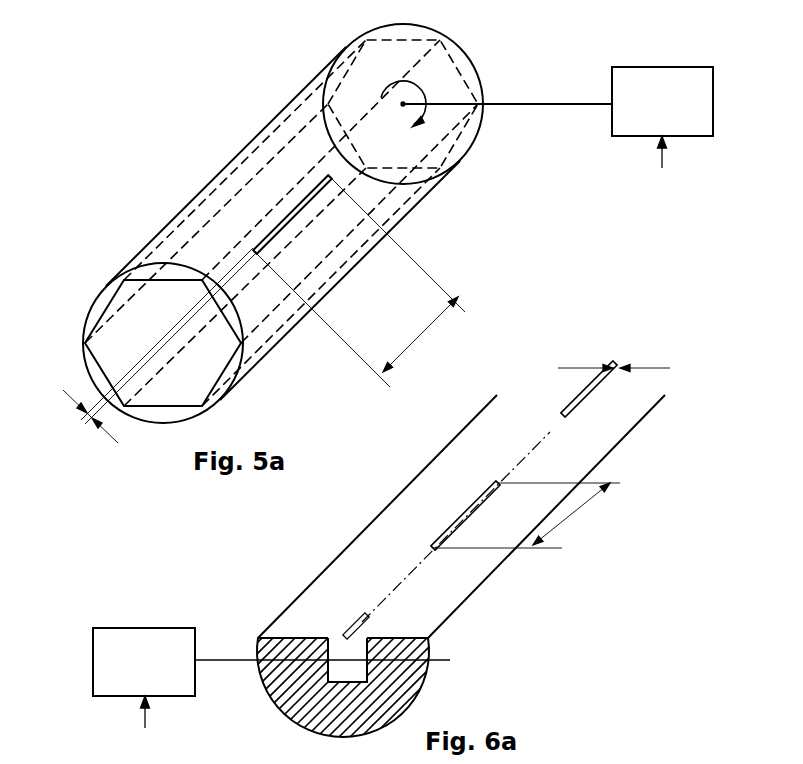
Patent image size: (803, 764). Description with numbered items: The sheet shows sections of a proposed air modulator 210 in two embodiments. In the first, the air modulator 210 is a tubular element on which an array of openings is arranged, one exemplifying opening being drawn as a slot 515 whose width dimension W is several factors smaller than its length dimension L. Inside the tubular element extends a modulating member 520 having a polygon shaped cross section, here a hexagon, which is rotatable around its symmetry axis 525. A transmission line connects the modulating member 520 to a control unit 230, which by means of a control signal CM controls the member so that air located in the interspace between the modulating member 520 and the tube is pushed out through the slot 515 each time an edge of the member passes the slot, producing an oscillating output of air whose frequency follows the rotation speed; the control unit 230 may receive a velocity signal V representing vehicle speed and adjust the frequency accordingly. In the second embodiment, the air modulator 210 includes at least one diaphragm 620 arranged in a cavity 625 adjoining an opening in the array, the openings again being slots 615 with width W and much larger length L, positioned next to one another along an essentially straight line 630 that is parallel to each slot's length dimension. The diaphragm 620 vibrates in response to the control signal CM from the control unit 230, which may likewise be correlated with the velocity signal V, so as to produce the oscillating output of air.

In FIG. 5A, the air modulator 210 is at (283, 223).
In FIG. 6A, the air modulator 210 is at (450, 516).
In FIG. 5A, the control unit 230 is at (574, 106).
In FIG. 6A, the control unit 230 is at (267, 669).
In FIG. 5A, the slot 515 is at (264, 288).
In FIG. 5A, the modulating member 520 is at (246, 223).
In FIG. 5A, the symmetry axis 525 is at (469, 71).
In FIG. 6A, the slot 615 is at (496, 483).
In FIG. 6A, the diaphragm 620 is at (362, 670).
In FIG. 6A, the cavity 625 is at (355, 655).
In FIG. 6A, the straight line 630 is at (569, 384).